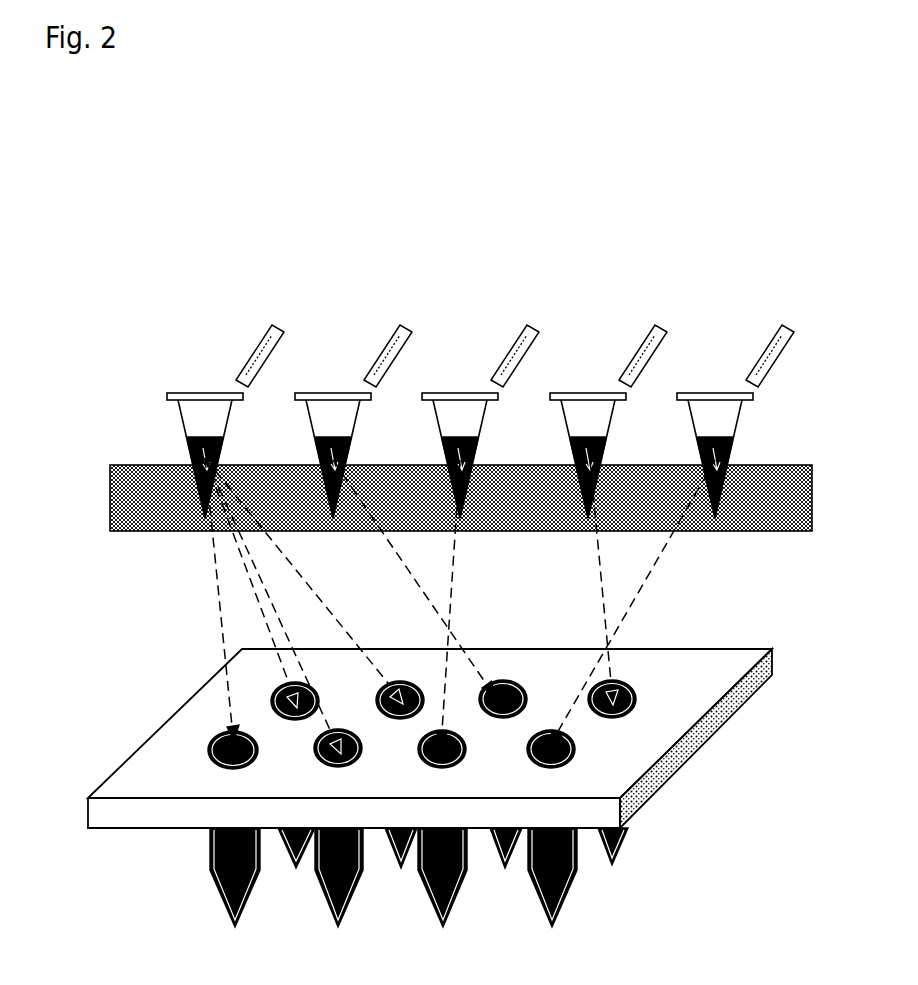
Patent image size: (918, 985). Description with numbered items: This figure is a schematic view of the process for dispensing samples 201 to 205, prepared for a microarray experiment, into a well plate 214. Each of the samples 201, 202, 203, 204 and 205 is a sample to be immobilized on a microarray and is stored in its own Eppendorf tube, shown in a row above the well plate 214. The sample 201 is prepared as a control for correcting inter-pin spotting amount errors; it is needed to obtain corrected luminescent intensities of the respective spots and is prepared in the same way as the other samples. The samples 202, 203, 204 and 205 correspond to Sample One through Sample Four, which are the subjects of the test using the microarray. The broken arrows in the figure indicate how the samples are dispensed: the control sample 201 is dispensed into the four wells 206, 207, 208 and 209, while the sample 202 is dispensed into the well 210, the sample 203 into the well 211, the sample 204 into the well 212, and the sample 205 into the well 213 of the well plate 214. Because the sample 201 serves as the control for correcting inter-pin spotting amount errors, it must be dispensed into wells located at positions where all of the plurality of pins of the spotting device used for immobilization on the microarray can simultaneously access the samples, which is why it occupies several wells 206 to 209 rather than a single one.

The sample 201 is at (190, 455).
The sample 202 is at (338, 442).
The sample 203 is at (470, 437).
The sample 204 is at (598, 445).
The sample 205 is at (732, 448).
The well 206 is at (277, 692).
The well 207 is at (208, 755).
The well 208 is at (400, 682).
The well 209 is at (313, 755).
The well 210 is at (517, 680).
The well 211 is at (452, 763).
The well 212 is at (635, 690).
The well 213 is at (577, 755).
The well plate 214 is at (737, 708).